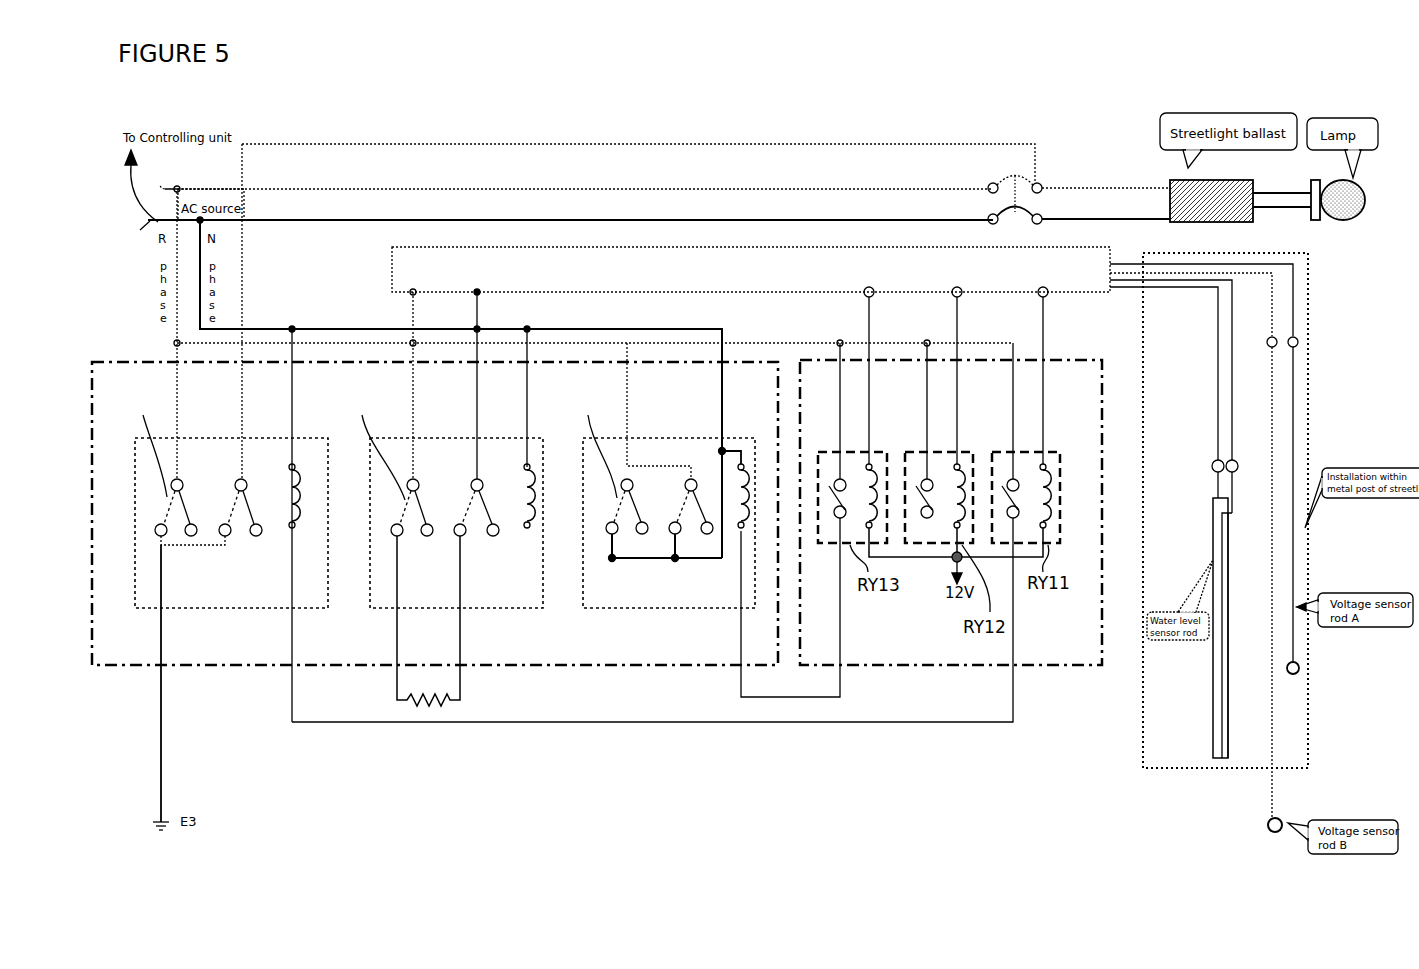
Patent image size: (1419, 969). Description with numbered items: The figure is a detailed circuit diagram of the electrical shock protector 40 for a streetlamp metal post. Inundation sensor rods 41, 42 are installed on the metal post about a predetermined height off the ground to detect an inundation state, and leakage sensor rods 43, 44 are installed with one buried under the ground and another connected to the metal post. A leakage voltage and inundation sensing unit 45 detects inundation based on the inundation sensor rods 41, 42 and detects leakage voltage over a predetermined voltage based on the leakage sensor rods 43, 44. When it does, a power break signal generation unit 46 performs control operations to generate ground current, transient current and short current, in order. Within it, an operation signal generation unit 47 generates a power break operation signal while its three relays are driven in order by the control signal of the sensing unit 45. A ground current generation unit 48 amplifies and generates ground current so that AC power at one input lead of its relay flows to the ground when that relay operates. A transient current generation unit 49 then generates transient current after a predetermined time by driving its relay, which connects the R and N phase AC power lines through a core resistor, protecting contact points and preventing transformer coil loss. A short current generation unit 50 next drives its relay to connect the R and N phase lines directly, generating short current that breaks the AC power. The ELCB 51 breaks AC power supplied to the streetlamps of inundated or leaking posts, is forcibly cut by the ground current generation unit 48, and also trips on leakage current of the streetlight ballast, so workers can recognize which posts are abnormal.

The electrical shock protector 40 is at (607, 138).
The inundation sensor rod 41 is at (1228, 703).
The inundation sensor rod 42 is at (1222, 705).
The leakage sensor rod 43 is at (1268, 820).
The leakage sensor rod 44 is at (1302, 666).
The leakage voltage and inundation sensing unit 45 is at (392, 287).
The power break signal generation unit 46 is at (252, 665).
The operation signal generation unit 47 is at (1045, 665).
The ground current generation unit 48 is at (210, 612).
The transient current generation unit 49 is at (427, 612).
The short current generation unit 50 is at (640, 612).
The ELCB 51 is at (1041, 182).